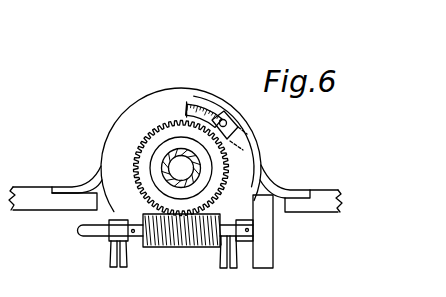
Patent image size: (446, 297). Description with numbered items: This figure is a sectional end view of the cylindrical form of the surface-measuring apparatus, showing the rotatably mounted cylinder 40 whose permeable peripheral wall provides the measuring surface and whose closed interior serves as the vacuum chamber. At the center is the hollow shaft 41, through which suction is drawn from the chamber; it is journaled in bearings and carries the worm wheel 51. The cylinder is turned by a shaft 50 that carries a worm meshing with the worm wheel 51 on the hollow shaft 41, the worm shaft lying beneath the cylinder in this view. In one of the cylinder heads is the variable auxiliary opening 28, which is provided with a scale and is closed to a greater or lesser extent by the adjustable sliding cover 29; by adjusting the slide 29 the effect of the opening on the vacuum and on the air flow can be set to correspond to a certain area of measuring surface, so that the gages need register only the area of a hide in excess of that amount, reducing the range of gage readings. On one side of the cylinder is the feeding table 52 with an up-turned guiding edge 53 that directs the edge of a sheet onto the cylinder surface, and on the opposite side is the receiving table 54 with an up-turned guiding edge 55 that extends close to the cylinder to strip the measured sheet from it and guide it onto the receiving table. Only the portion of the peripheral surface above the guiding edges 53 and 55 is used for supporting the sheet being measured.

The variable auxiliary opening 28 is at (188, 102).
The adjustable sliding cover 29 is at (240, 127).
The cylinder 40 is at (128, 106).
The hollow shaft 41 is at (163, 153).
The shaft 50 is at (100, 233).
The worm wheel 51 is at (160, 123).
The feeding table 52 is at (318, 190).
The up-turned guiding edge 53 is at (270, 178).
The receiving table 54 is at (29, 193).
The up-turned guiding edge 55 is at (97, 177).